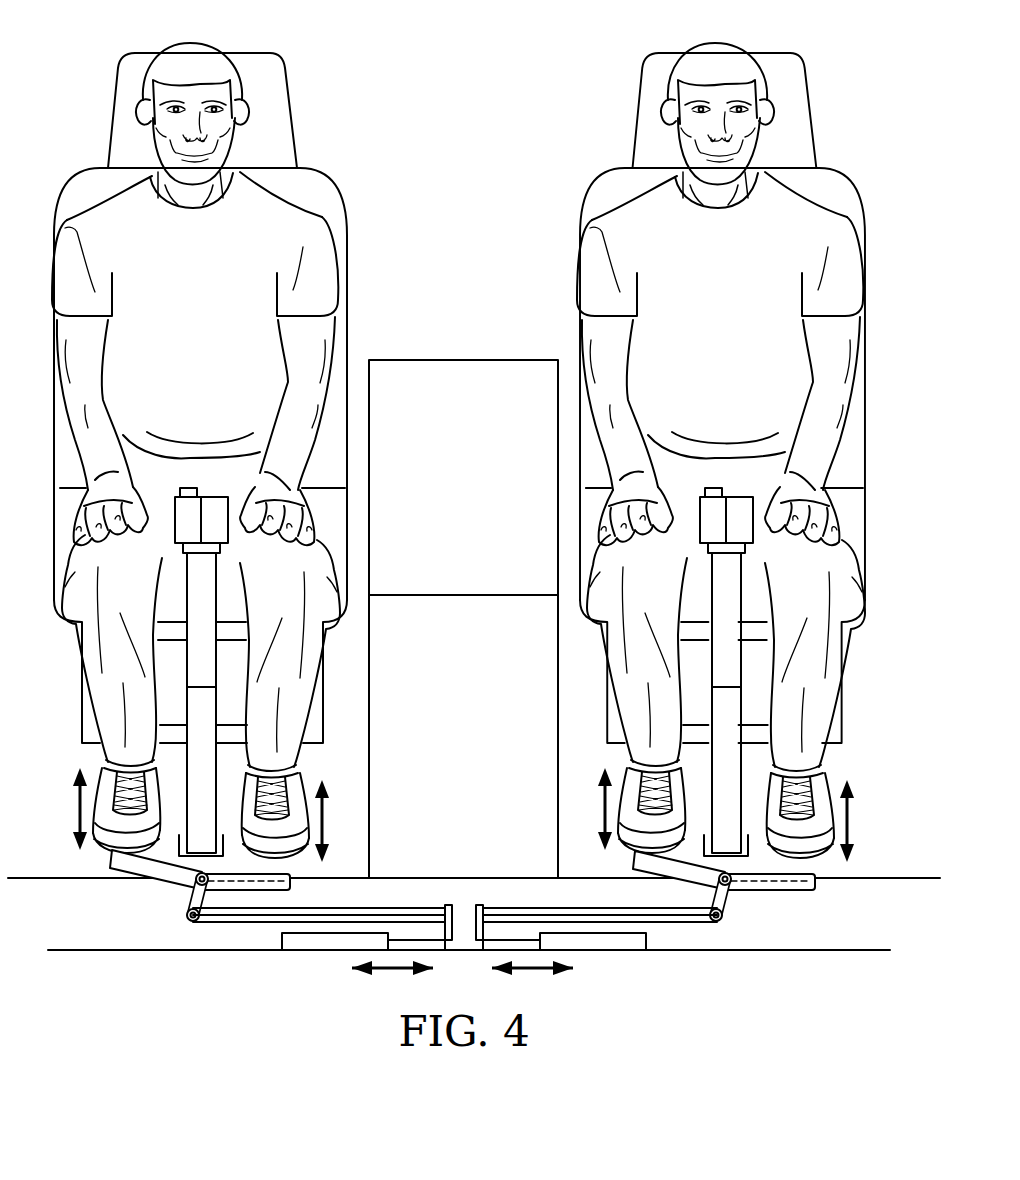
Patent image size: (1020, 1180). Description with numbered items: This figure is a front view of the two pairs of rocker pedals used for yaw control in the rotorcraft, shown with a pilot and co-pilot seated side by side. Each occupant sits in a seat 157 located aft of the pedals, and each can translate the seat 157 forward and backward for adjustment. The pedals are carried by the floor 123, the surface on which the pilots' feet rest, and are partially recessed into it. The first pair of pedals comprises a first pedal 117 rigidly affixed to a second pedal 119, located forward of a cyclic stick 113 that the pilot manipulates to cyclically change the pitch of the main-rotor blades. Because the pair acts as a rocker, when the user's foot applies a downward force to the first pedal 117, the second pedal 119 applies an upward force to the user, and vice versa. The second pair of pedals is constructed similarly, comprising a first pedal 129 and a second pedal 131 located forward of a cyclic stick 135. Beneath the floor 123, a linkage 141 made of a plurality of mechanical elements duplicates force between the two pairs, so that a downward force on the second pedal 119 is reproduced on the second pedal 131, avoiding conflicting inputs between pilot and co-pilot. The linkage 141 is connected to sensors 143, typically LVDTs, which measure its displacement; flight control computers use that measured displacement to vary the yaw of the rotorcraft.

The cyclic stick 113 is at (737, 510).
The first pedal 117 is at (780, 890).
The second pedal 119 is at (632, 862).
The floor 123 is at (887, 877).
The first pedal 129 is at (300, 887).
The second pedal 131 is at (118, 877).
The cyclic stick 135 is at (212, 510).
The linkage 141 is at (495, 905).
The sensors 143 is at (310, 943).
The pilot's seat 157 is at (848, 691).